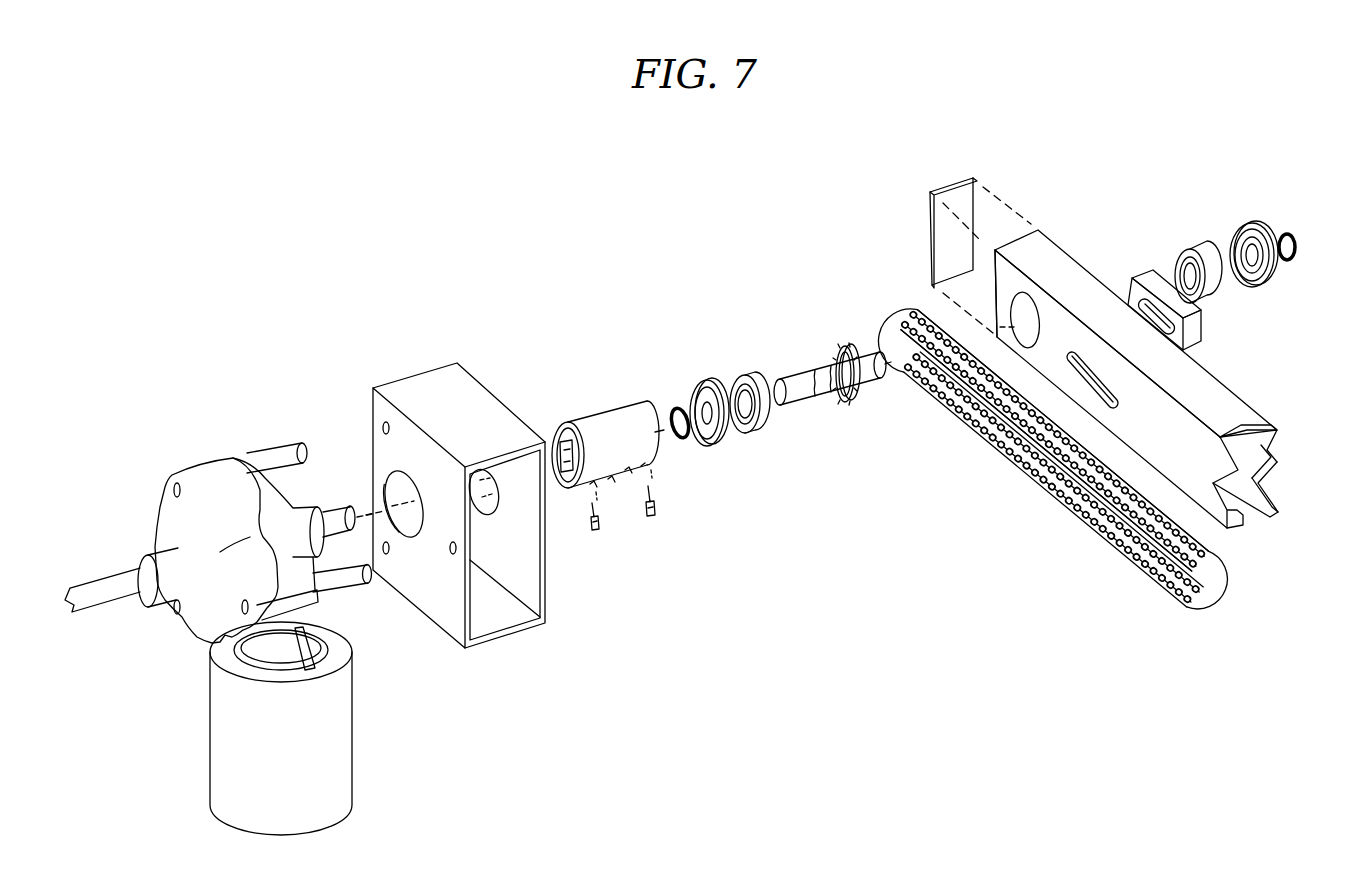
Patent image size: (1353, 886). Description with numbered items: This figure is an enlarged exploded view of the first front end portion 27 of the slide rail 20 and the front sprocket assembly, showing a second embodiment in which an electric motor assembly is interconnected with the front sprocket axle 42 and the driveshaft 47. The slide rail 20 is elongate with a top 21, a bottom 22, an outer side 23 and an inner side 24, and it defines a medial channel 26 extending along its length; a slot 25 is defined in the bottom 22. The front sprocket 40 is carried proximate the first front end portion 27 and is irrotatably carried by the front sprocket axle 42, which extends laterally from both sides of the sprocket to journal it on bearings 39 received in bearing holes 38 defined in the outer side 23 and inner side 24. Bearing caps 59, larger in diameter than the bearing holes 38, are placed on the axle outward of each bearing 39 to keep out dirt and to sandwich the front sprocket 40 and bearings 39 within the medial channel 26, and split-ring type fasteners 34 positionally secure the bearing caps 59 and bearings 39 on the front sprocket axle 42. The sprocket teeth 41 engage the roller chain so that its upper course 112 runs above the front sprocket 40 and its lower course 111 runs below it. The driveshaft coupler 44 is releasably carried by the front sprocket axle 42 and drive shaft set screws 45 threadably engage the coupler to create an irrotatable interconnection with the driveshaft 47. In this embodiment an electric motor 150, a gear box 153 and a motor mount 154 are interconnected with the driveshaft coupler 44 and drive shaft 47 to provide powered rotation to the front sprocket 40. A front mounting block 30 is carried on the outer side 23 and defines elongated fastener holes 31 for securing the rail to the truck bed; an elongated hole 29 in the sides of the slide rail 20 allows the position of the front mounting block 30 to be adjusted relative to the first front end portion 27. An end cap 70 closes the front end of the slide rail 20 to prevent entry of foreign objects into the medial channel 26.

The slide rail 20 is at (1161, 368).
The top 21 is at (1214, 390).
The bottom 22 is at (1267, 514).
The outer side 23 is at (1273, 493).
The inner side 24 is at (1148, 449).
The slot 25 is at (1248, 513).
The medial channel 26 is at (1273, 463).
The first front end portion 27 is at (1038, 255).
The elongated hole 29 is at (1098, 385).
The front mounting block 30 is at (1143, 278).
The elongated fastener holes 31 is at (1155, 327).
The split-ring type fasteners 34 is at (673, 410).
The bearing holes 38 is at (1030, 328).
The bearings 39 is at (760, 422).
The front sprocket 40 is at (840, 350).
The sprocket teeth 41 is at (850, 402).
The front sprocket axle 42 is at (792, 382).
The driveshaft coupler 44 is at (605, 420).
The drive shaft set screws 45 is at (651, 520).
The driveshaft 47 is at (338, 517).
The bearing caps 59 is at (707, 447).
The end cap 70 is at (950, 193).
The lower course 111 is at (1037, 483).
The upper course 112 is at (983, 433).
The electric motor 150 is at (325, 726).
The gear box 153 is at (212, 502).
The motor mount 154 is at (547, 575).